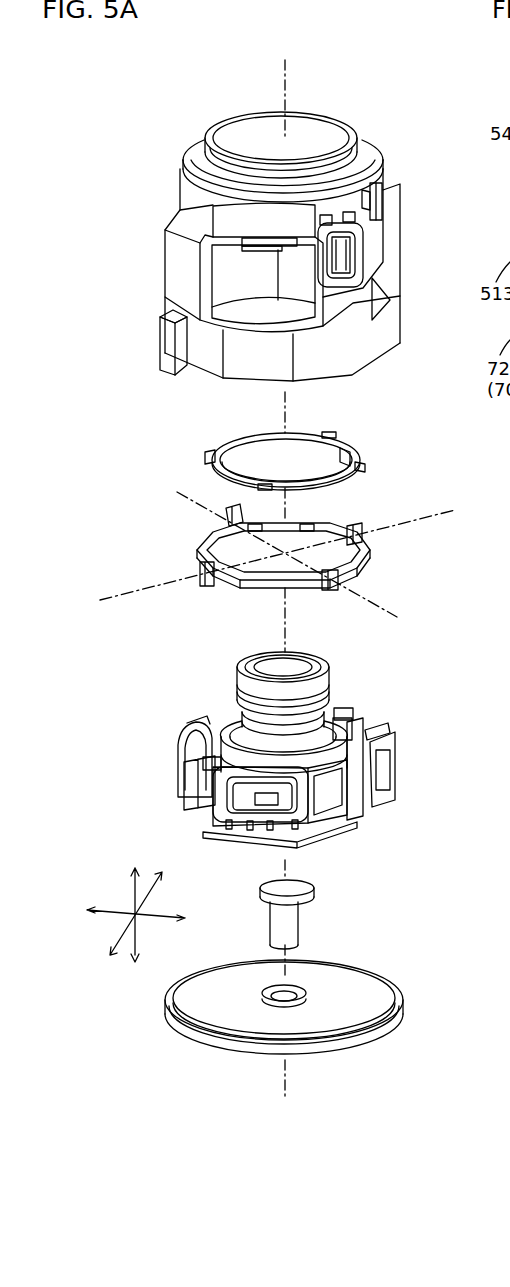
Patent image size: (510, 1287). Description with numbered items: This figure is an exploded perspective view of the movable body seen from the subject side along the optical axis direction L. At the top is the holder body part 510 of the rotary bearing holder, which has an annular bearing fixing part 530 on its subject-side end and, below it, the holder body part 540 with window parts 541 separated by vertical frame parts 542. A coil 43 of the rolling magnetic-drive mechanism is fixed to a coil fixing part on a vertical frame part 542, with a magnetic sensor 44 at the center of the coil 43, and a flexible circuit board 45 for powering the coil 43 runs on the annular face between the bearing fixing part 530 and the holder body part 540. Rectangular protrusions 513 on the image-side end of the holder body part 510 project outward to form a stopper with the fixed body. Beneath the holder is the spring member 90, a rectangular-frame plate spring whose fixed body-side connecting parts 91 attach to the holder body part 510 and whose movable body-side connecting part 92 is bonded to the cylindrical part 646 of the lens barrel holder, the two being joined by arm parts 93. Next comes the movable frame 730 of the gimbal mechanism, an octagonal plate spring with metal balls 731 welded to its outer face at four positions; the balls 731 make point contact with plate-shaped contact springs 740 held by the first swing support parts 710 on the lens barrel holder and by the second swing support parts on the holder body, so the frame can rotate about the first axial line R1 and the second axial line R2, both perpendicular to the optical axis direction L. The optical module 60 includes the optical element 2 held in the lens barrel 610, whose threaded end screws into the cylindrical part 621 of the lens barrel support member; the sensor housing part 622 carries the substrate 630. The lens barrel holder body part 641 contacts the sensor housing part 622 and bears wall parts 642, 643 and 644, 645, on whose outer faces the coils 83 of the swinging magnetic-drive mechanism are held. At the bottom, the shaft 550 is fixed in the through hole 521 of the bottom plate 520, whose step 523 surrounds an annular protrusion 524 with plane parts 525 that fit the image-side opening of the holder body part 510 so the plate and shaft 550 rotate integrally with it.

The optical element 2 is at (270, 640).
The optical axis direction L is at (290, 82).
The holder body part 510 is at (162, 167).
The bearing fixing part 530 is at (352, 155).
The flexible circuit board 45 is at (373, 176).
The coil 43 is at (358, 240).
The magnetic sensor 44 is at (345, 262).
The window part 541 is at (165, 270).
The vertical frame part 542 is at (172, 258).
The protrusion 513 is at (163, 362).
The holder body part 540 is at (203, 375).
The spring member 90 is at (210, 435).
The fixed body-side connecting part 91 is at (205, 454).
The movable body-side connecting part 92 is at (340, 455).
The arm part 93 is at (352, 448).
The movable frame 730 is at (362, 552).
The ball 731 is at (235, 538).
The contact spring 740 is at (225, 518).
The first axial line R1 is at (455, 510).
The second axial line R2 is at (397, 617).
The optical module 60 is at (453, 698).
The lens barrel 610 is at (245, 666).
The cylindrical part 621 is at (248, 718).
The sensor housing part 622 is at (340, 846).
The substrate 630 is at (345, 832).
The lens barrel holder body part 641 is at (375, 798).
The cylindrical part 646 is at (360, 812).
The wall part 642 is at (382, 730).
The wall part 643 is at (207, 716).
The wall part 644 is at (223, 825).
The wall part 645 is at (336, 706).
The first swing support part 710 is at (205, 776).
The coil 83 is at (182, 736).
The shaft 550 is at (300, 920).
The bottom plate 520 is at (400, 1024).
The through hole 521 is at (302, 988).
The step 523 is at (400, 990).
The annular protrusion 524 is at (383, 974).
The plane part 525 is at (400, 1010).